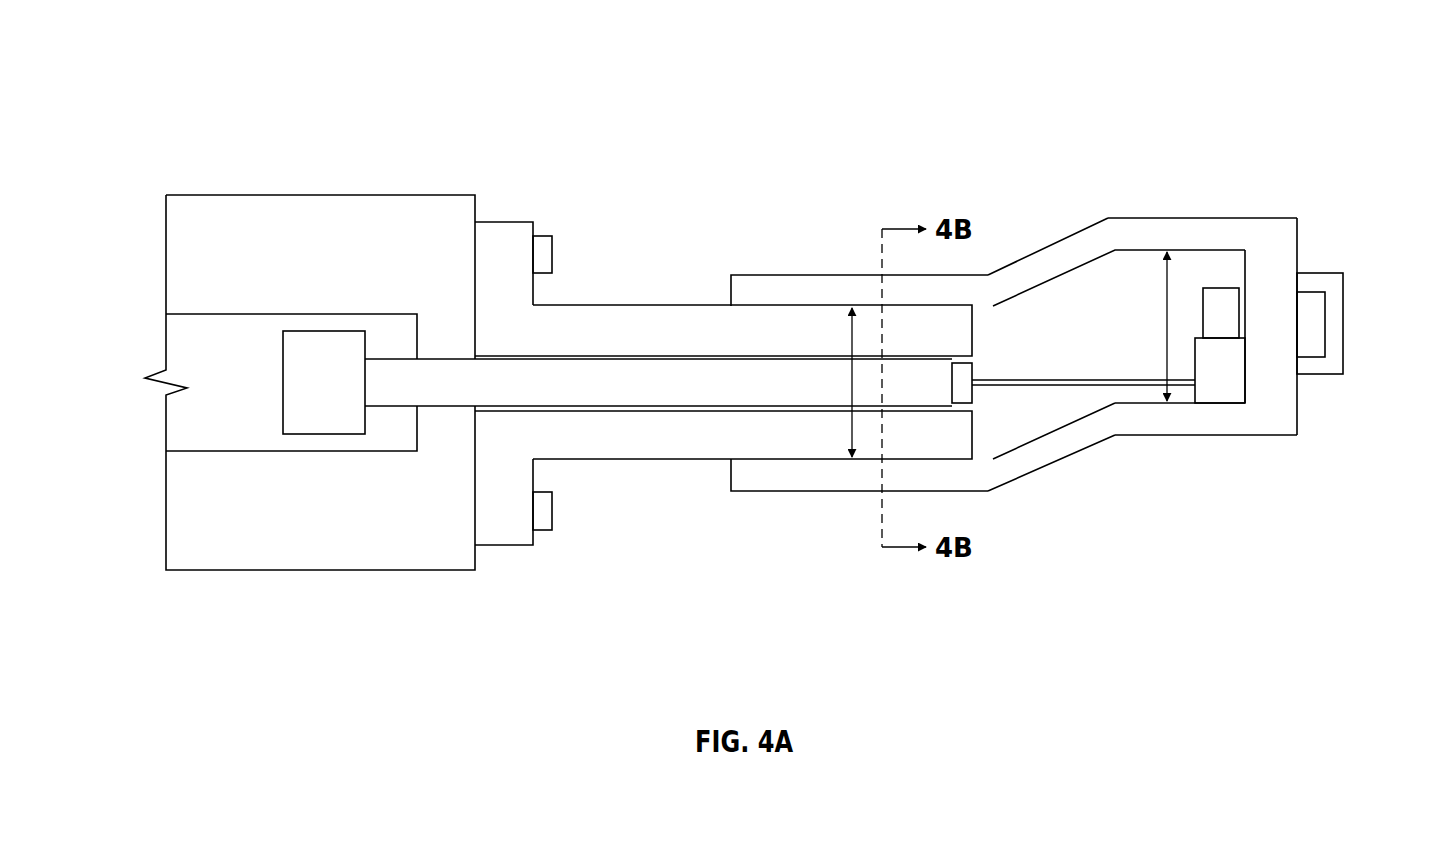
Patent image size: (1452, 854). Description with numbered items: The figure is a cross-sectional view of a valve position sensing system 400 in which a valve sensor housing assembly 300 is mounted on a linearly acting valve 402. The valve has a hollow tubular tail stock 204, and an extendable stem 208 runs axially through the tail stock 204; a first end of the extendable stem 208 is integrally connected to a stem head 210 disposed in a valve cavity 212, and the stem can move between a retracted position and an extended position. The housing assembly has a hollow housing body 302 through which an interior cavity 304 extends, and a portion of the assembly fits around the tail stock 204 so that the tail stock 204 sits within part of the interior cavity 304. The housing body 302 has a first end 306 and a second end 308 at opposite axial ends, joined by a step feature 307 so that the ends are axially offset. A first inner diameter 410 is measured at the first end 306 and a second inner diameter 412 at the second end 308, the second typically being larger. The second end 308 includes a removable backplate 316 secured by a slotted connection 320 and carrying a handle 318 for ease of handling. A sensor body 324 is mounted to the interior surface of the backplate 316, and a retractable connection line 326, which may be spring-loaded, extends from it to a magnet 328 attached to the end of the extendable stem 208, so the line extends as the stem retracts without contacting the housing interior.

The valve position sensing system 400 is at (558, 435).
The linearly acting valve 402 is at (472, 180).
The valve cavity 212 is at (196, 468).
The stem head 210 is at (323, 428).
The extendable stem 208 is at (648, 392).
The tail stock 204 is at (610, 456).
The valve sensor housing assembly 300 is at (1075, 298).
The first end 306 is at (801, 529).
The step feature 307 is at (1033, 252).
The first inner diameter 410 is at (852, 398).
The magnet 328 is at (973, 393).
The second end 308 is at (1200, 315).
The housing body 302 is at (1210, 217).
The interior cavity 304 is at (1097, 287).
The removable backplate 316 is at (1300, 258).
The slotted connection 320 is at (1290, 395).
The handle 318 is at (1345, 300).
The sensor body 324 is at (1235, 397).
The retractable connection line 326 is at (1112, 386).
The second inner diameter 412 is at (1165, 327).